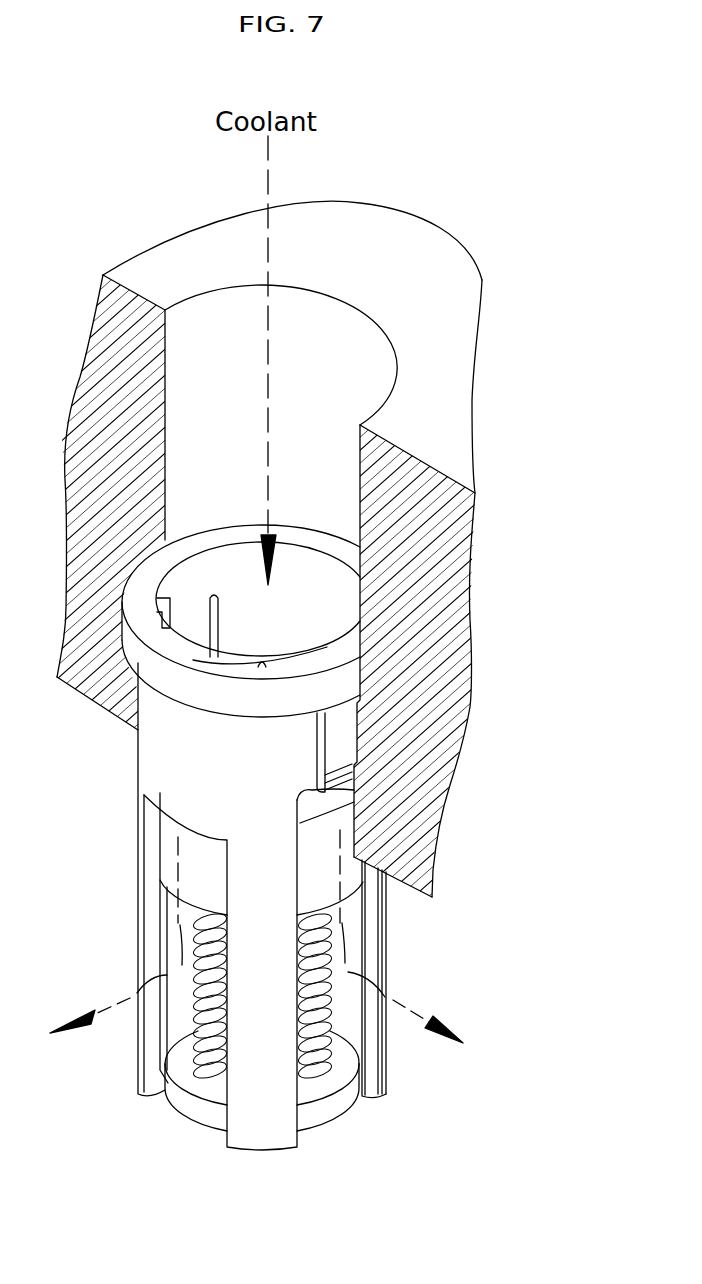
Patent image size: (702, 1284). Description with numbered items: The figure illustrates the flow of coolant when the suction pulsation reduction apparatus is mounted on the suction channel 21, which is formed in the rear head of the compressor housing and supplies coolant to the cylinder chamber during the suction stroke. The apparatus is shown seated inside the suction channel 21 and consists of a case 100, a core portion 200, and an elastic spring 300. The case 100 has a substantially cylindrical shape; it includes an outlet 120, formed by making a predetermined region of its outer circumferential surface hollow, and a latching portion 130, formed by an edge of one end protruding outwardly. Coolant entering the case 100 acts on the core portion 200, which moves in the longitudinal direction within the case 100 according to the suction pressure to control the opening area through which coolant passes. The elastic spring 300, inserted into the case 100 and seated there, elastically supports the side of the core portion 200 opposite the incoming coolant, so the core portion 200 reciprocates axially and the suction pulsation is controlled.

The suction channel 21 is at (370, 392).
The case 100 is at (160, 758).
The outlet 120 is at (176, 855).
The latching portion 130 is at (357, 675).
The core portion 200 is at (352, 870).
The elastic spring 300 is at (168, 924).